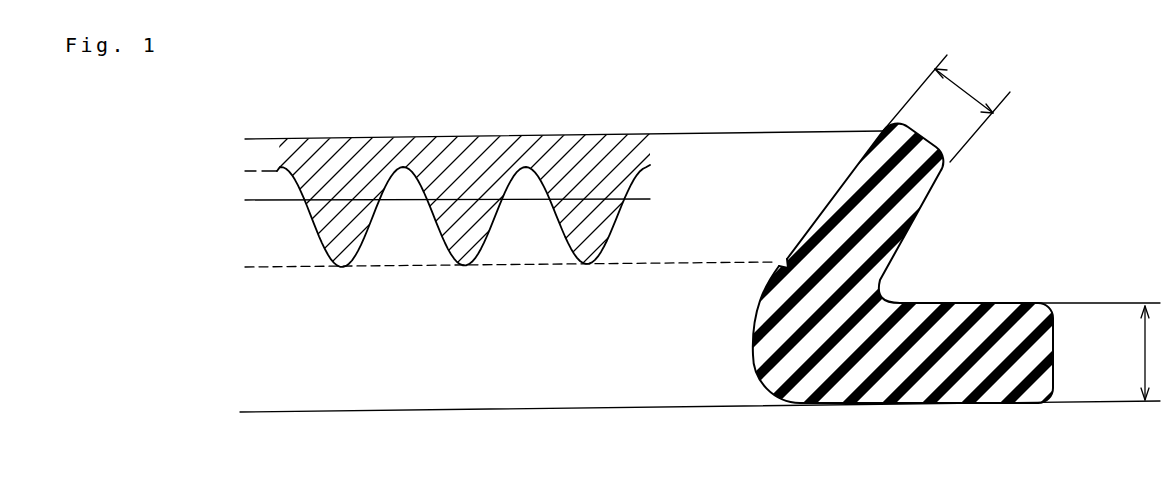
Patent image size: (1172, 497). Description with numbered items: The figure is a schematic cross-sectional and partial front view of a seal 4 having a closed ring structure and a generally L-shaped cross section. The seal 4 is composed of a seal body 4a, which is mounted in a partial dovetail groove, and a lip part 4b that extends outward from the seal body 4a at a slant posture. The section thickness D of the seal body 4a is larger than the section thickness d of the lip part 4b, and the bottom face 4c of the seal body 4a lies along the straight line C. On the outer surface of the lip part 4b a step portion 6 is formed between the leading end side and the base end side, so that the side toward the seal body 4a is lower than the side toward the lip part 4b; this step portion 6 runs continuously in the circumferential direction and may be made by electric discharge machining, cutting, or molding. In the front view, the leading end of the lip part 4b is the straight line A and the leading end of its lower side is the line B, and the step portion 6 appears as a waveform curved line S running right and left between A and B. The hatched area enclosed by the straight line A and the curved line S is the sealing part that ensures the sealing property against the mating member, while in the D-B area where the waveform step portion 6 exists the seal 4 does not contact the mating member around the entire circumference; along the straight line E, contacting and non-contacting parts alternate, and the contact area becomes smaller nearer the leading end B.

The seal 4 is at (789, 296).
The seal body 4a is at (929, 387).
The lip part 4b is at (901, 212).
The bottom face 4c is at (988, 403).
The step portion 6 is at (787, 264).
The curved line S is at (292, 208).
The leading end of the lip part A is at (552, 140).
The leading end of a lower side of the lip part B is at (499, 269).
The bottom face of the seal body C is at (691, 412).
The section thickness of the seal body D is at (695, 280).
The straight line E is at (436, 201).
The section thickness of the lip part d is at (946, 108).